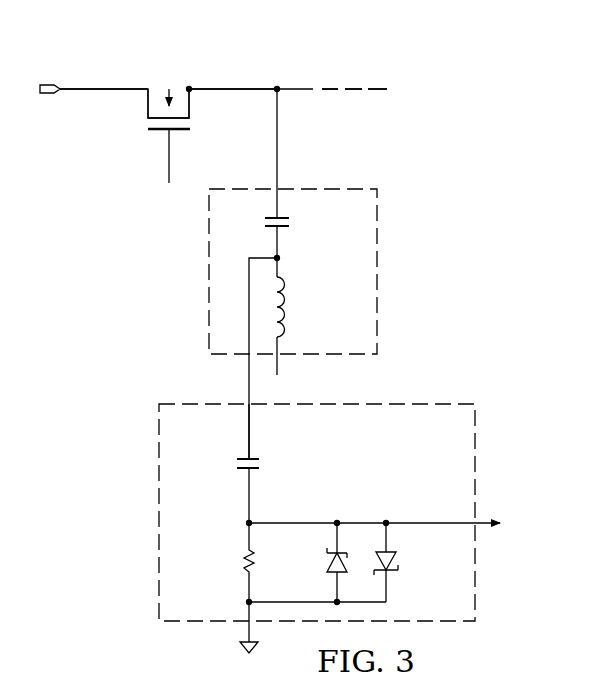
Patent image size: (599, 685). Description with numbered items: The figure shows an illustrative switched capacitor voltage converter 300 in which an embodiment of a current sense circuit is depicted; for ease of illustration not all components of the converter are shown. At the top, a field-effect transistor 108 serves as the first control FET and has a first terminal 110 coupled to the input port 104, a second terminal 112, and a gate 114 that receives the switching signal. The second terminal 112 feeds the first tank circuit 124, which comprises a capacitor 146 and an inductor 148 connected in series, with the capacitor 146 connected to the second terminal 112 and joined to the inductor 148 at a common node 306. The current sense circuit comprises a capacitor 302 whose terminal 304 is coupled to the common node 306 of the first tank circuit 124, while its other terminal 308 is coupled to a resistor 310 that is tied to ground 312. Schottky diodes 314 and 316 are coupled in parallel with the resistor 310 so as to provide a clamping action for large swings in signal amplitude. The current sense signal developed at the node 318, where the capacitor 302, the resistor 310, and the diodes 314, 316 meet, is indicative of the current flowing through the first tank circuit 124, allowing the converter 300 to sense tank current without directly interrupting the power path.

The switched capacitor voltage converter 300 is at (447, 83).
The input port 104 is at (47, 95).
The first terminal 110 is at (133, 89).
The second terminal 112 is at (203, 89).
The field-effect transistor 108 is at (157, 132).
The gate 114 is at (172, 153).
The first tank circuit 124 is at (380, 257).
The capacitor 146 is at (289, 223).
The common node 306 is at (273, 255).
The inductor 148 is at (294, 300).
The terminal 304 is at (247, 440).
The capacitor 302 is at (260, 463).
The terminal 308 is at (247, 488).
The node 318 is at (252, 520).
The resistor 310 is at (243, 560).
The Schottky diode 314 is at (328, 558).
The Schottky diode 316 is at (395, 560).
The ground 312 is at (243, 648).